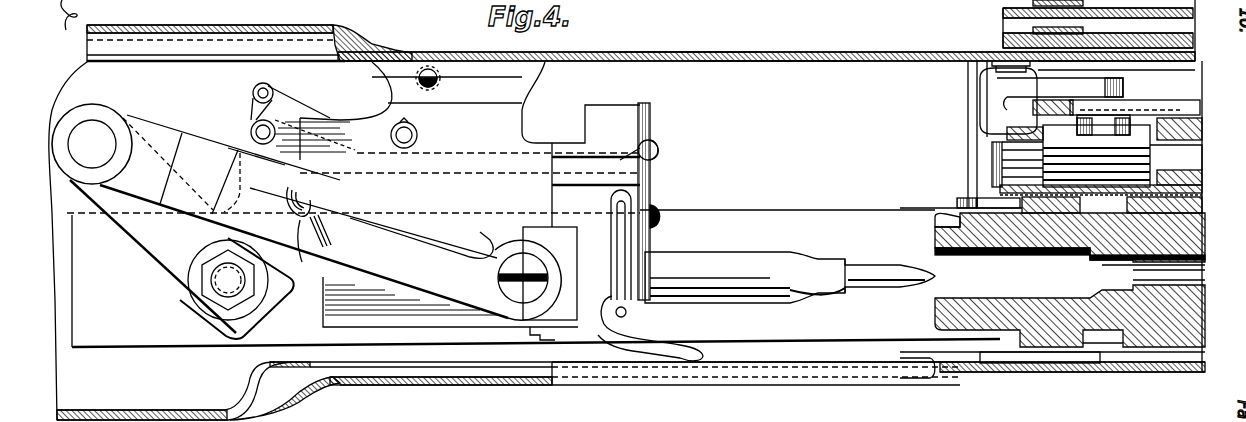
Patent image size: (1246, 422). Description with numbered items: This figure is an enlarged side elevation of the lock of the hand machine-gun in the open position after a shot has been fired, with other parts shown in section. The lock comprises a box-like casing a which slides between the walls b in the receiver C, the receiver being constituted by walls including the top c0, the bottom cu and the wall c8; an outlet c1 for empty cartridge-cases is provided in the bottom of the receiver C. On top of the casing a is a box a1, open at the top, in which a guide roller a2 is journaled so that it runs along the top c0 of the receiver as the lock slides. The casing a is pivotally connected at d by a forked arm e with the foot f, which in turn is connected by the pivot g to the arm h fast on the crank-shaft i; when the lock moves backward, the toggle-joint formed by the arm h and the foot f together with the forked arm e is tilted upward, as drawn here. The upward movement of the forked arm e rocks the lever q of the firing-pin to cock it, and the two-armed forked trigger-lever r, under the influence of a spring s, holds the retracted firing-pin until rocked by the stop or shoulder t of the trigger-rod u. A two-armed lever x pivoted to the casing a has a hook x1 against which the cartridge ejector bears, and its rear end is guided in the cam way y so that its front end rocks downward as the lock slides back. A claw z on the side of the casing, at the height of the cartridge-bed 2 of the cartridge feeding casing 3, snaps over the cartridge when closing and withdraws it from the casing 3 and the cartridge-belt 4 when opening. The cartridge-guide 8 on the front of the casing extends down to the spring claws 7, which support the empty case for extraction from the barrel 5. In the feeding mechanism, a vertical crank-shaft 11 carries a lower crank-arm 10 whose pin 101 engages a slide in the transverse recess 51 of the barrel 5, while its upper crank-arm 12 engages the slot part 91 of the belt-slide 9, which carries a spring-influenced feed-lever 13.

The lock casing a is at (500, 118).
The box a1 is at (478, 92).
The guide roller a2 is at (433, 68).
The walls b is at (105, 332).
The top wall of receiver c0 is at (688, 60).
The receiver C is at (740, 93).
The receiver wall c8 is at (820, 97).
The outlet for empty cartridge-cases c1 is at (748, 372).
The bottom wall of receiver cu is at (470, 380).
The pivot of lock d is at (520, 262).
The forked arm e is at (277, 205).
The foot f is at (178, 136).
The pivot g is at (112, 136).
The arm h is at (128, 228).
The crank-shaft i is at (220, 274).
The firing-pin lever q is at (335, 160).
The trigger-lever r is at (662, 344).
The spring s is at (526, 345).
The stop or shoulder t is at (1012, 364).
The trigger-rod u is at (404, 364).
The two-armed lever x is at (338, 122).
The hook x1 is at (680, 230).
The cam way y is at (282, 100).
The claw z is at (650, 138).
The cartridge bed 2 is at (1000, 140).
The cartridge feeding casing 3 is at (1185, 142).
The cartridge-belt 4 is at (1195, 188).
The barrel 5 is at (1212, 226).
The transverse recess 51 is at (935, 238).
The spring claws 7 is at (612, 275).
The cartridge-guide 8 is at (655, 200).
The belt-slide 9 is at (1195, 102).
The effective part of slot 91 is at (1160, 106).
The lower crank-arm 10 is at (958, 198).
The pin 101 is at (935, 216).
The vertical crank-shaft 11 is at (998, 64).
The upper crank-arm 12 is at (1028, 92).
The feed-lever 13 is at (988, 158).